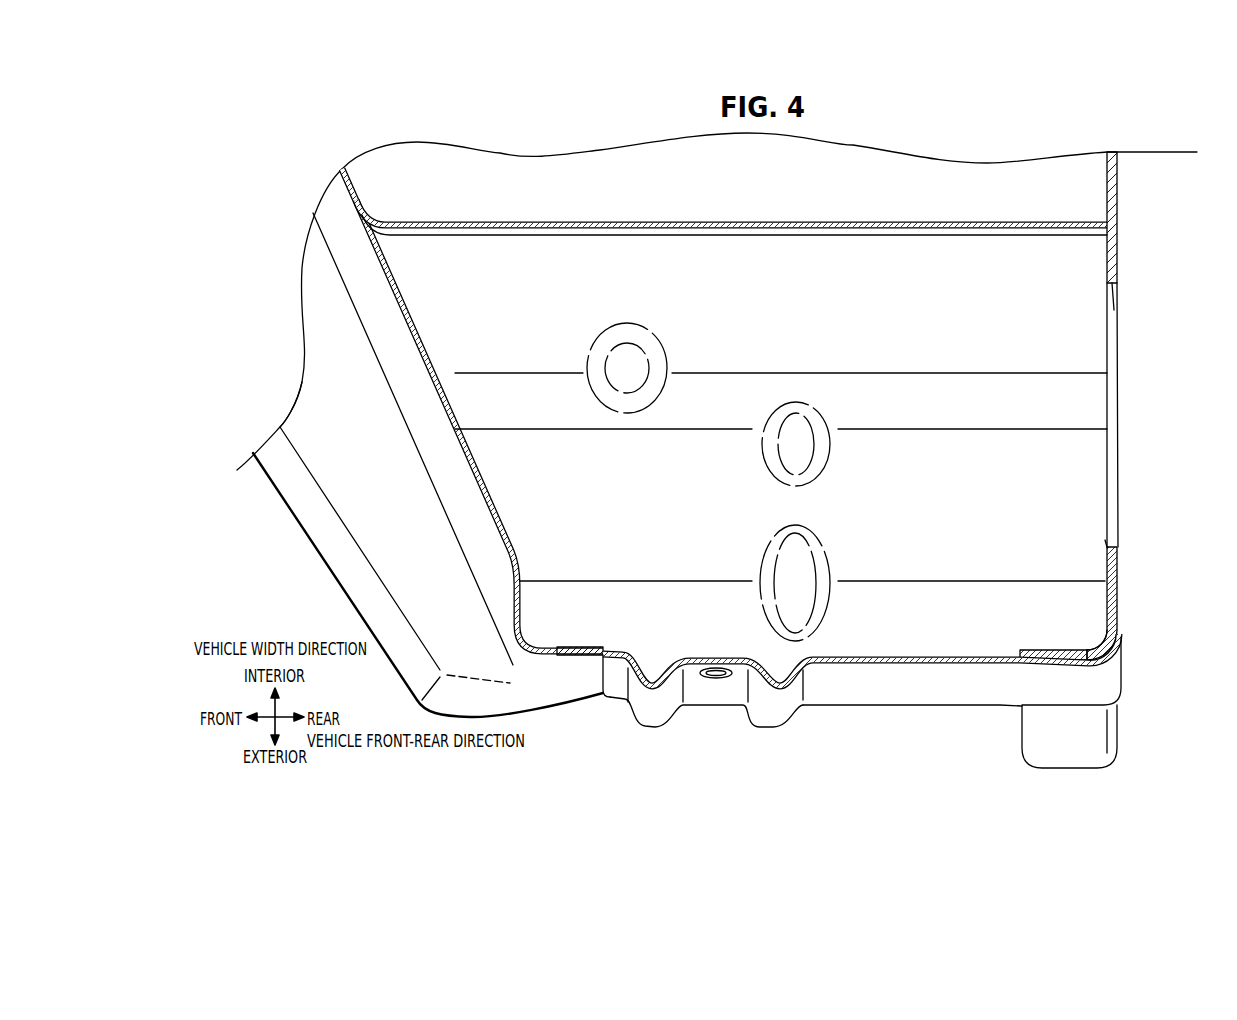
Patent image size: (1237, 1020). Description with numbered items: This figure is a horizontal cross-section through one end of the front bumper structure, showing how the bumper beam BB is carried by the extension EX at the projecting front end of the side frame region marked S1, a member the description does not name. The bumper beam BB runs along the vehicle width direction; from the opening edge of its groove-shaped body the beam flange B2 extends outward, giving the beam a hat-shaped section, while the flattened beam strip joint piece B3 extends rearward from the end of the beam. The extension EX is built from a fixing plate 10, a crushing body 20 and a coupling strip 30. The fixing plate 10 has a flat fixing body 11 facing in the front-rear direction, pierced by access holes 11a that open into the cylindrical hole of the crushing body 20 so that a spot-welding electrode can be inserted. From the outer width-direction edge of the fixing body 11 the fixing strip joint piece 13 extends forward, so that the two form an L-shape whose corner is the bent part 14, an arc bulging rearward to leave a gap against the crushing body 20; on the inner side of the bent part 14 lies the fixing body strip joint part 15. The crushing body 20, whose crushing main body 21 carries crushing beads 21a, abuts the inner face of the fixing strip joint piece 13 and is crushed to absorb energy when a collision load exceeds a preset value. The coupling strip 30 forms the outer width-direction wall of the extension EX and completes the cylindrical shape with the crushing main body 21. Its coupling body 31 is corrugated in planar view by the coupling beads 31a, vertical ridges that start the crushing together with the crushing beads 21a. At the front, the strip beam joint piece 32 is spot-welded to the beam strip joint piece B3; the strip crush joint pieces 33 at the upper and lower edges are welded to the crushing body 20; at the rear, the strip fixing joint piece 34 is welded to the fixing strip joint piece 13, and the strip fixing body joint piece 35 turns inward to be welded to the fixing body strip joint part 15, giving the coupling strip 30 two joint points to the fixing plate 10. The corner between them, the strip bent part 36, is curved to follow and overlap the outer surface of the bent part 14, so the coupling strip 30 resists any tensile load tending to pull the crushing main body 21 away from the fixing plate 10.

The fixing plate 10 is at (1148, 217).
The fixing body 11 is at (1118, 205).
The access holes 11a is at (1120, 315).
The fixing strip joint piece 13 is at (1045, 650).
The bent part 14 is at (1105, 637).
The fixing body strip joint part 15 is at (1107, 565).
The crushing body 20 is at (731, 344).
The crushing main body 21 is at (733, 273).
The crushing beads 21a is at (795, 450).
The coupling strip 30 is at (888, 710).
The coupling body 31 is at (897, 675).
The coupling beads 31a is at (657, 717).
The strip beam joint piece 32 is at (585, 647).
The strip crush joint piece 33 is at (957, 706).
The strip fixing joint piece 34 is at (1058, 680).
The strip fixing body joint piece 35 is at (1120, 572).
The strip bent part 36 is at (1115, 670).
The side member S1 is at (329, 150).
The extension EX is at (990, 153).
The beam flange B2 is at (277, 450).
The bumper beam BB is at (284, 540).
The beam strip joint piece B3 is at (580, 677).